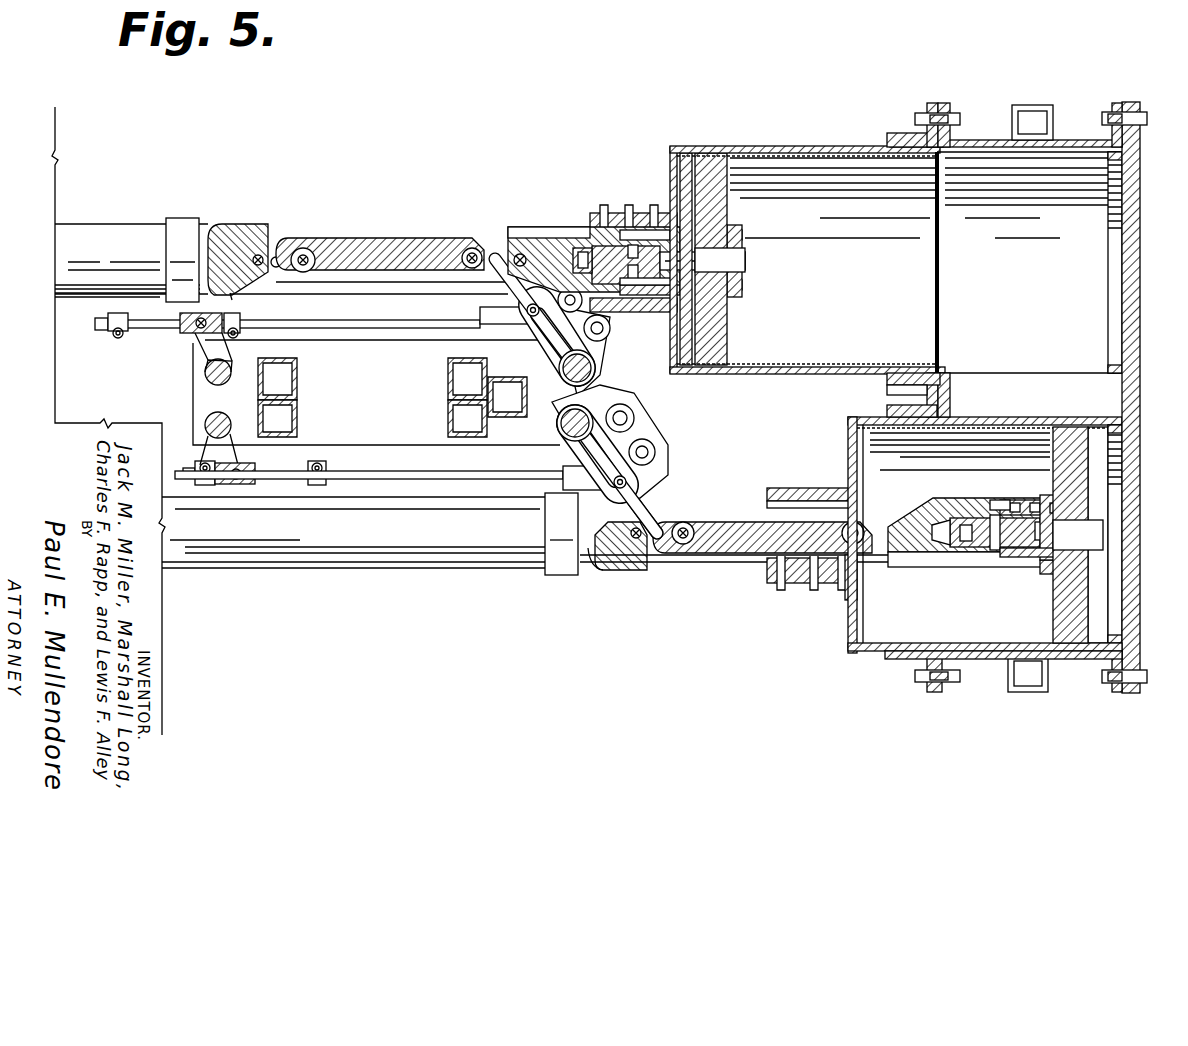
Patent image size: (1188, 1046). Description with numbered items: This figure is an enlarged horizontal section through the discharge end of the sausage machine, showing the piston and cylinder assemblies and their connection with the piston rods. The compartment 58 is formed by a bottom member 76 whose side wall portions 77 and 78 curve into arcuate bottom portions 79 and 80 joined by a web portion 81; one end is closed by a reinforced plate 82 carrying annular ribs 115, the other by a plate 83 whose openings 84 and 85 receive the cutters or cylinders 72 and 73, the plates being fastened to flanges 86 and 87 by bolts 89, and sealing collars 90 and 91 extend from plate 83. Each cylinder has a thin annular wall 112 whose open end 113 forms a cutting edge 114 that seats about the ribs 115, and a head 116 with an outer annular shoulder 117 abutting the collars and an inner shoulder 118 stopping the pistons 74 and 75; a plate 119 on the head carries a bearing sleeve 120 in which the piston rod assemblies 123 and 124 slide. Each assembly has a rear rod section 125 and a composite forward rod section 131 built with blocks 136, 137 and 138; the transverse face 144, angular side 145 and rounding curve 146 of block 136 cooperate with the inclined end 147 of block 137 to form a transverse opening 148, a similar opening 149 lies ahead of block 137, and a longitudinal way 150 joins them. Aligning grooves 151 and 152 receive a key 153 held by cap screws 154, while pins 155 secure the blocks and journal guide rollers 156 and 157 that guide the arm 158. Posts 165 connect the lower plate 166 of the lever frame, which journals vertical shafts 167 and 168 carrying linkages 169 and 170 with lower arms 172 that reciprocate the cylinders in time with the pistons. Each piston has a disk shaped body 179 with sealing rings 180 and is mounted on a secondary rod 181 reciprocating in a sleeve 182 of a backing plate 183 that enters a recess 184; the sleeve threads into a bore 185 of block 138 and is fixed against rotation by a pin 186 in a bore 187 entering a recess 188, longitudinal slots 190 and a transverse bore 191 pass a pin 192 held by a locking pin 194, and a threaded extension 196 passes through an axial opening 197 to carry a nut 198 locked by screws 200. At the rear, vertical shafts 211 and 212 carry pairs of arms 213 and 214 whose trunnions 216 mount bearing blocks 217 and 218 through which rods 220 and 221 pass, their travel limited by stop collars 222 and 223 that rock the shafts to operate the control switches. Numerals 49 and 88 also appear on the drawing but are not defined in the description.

The spacer block 49 is at (1053, 119).
The compartment 58 is at (1095, 283).
The cutter or cylinder 72 is at (1065, 417).
The cutter or cylinder 73 is at (830, 374).
The piston 74 is at (1090, 620).
The piston 75 is at (720, 153).
The bottom member 76 is at (945, 685).
The side wall portion 77 is at (988, 660).
The side wall portion 78 is at (985, 140).
The arcuate bottom portion 79 is at (1100, 580).
The arcuate bottom portion 80 is at (1100, 225).
The web portion 81 is at (1125, 398).
The plate 82 is at (1140, 178).
The plate 83 is at (934, 103).
The opening 84 is at (948, 644).
The opening 85 is at (940, 333).
The flange 86 is at (948, 103).
The flange 87 is at (1114, 103).
The nut 88 is at (915, 119).
The bolt 89 is at (1140, 118).
The collar 90 is at (888, 405).
The collar 91 is at (888, 140).
The annular wall 112 is at (822, 147).
The open end 113 is at (940, 260).
The cutting edge 114 is at (935, 296).
The annular rib 115 is at (1115, 365).
The head 116 is at (672, 147).
The annular shoulder 117 is at (700, 147).
The shoulder 118 is at (668, 160).
The plate 119 is at (665, 312).
The bearing sleeve 120 is at (640, 312).
The piston rod assembly 123 is at (416, 570).
The piston rod assembly 124 is at (138, 222).
The rear rod section 125 is at (75, 225).
The composite forward rod section 131 is at (414, 284).
The block 136 is at (255, 225).
The block 137 is at (395, 237).
The block 138 is at (572, 238).
The transverse face 144 is at (303, 248).
The angularly extending side 145 is at (246, 292).
The rounding curve 146 is at (276, 268).
The inclined end 147 is at (362, 237).
The transverse opening 148 is at (306, 248).
The transverse opening 149 is at (497, 252).
The longitudinal groove or way 150 is at (358, 283).
The aligning groove 151 is at (430, 237).
The aligning groove 152 is at (512, 230).
The key 153 is at (602, 212).
The cap screw 154 is at (480, 318).
The pin 155 is at (312, 280).
The guide roller 156 is at (290, 270).
The guide roller 157 is at (472, 270).
The arm 158 is at (630, 570).
The post 165 is at (300, 395).
The lower plate 166 is at (386, 430).
The vertical shaft 167 is at (605, 363).
The vertical shaft 168 is at (598, 365).
The linkage 169 is at (650, 422).
The linkage 170 is at (525, 347).
The lower arm 172 is at (560, 375).
The disk shaped body 179 is at (735, 300).
The sealing ring 180 is at (690, 366).
The secondary rod 181 is at (715, 289).
The sleeve 182 is at (560, 230).
The piston backing plate 183 is at (727, 216).
The recess 184 is at (655, 228).
The bore 185 is at (580, 246).
The pin 186 is at (725, 300).
The bore 187 is at (622, 313).
The recess 188 is at (745, 285).
The longitudinal slot 190 is at (612, 246).
The transverse bore 191 is at (975, 515).
The pin 192 is at (700, 228).
The locking pin 194 is at (966, 555).
The reduced externally threaded extension 196 is at (746, 260).
The axial opening 197 is at (742, 284).
The nut 198 is at (745, 242).
The screw 200 is at (740, 240).
The vertical shaft 211 is at (205, 418).
The vertical shaft 212 is at (205, 370).
The pair of arms 213 is at (210, 443).
The pair of arms 214 is at (205, 345).
The trunnion 216 is at (225, 486).
The bearing block 217 is at (252, 486).
The bearing block 218 is at (180, 316).
The rod 220 is at (496, 470).
The rod 221 is at (392, 326).
The stop collar 222 is at (262, 320).
The stop collar 223 is at (110, 330).